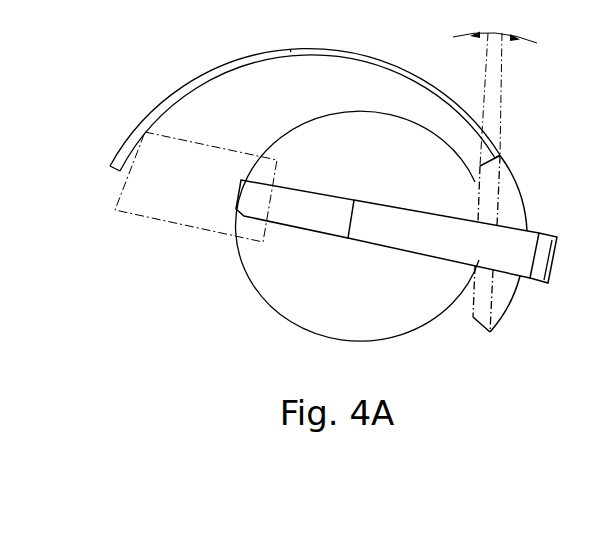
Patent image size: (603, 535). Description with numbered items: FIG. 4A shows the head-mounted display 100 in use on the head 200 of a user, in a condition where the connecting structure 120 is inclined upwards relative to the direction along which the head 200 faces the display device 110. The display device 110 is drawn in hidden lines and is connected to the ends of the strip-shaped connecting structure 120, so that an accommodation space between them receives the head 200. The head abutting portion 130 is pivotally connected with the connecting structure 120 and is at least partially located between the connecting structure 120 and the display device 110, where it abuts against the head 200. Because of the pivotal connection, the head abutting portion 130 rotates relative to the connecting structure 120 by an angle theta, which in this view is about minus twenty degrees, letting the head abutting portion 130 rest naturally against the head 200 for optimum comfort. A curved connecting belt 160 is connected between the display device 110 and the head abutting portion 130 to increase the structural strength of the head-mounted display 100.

The head-mounted display 100 is at (331, 196).
The display device 110 is at (170, 207).
The connecting structure 120 is at (386, 240).
The head abutting portion 130 is at (510, 201).
The connecting belt 160 is at (202, 78).
The head 200 is at (273, 282).